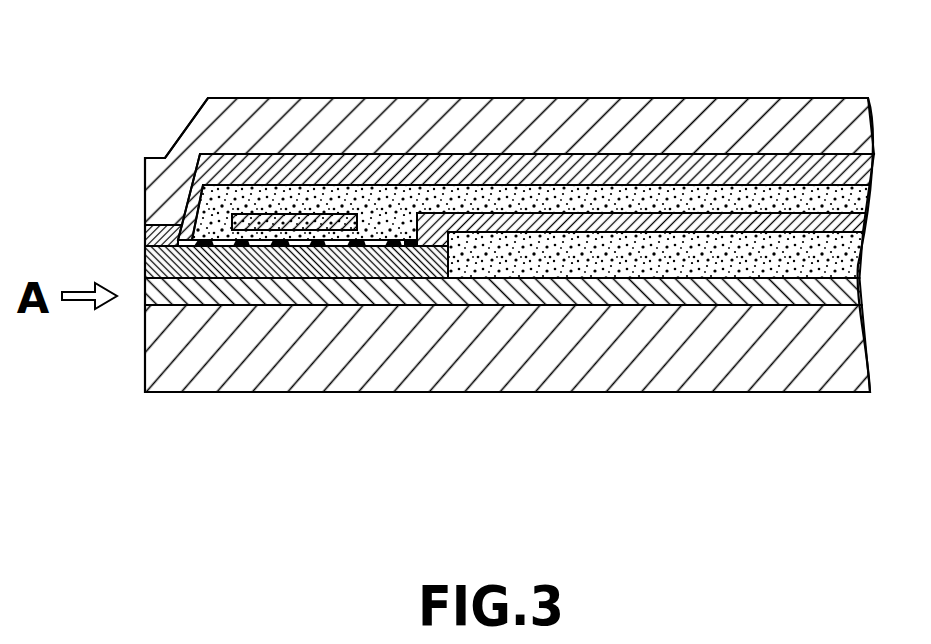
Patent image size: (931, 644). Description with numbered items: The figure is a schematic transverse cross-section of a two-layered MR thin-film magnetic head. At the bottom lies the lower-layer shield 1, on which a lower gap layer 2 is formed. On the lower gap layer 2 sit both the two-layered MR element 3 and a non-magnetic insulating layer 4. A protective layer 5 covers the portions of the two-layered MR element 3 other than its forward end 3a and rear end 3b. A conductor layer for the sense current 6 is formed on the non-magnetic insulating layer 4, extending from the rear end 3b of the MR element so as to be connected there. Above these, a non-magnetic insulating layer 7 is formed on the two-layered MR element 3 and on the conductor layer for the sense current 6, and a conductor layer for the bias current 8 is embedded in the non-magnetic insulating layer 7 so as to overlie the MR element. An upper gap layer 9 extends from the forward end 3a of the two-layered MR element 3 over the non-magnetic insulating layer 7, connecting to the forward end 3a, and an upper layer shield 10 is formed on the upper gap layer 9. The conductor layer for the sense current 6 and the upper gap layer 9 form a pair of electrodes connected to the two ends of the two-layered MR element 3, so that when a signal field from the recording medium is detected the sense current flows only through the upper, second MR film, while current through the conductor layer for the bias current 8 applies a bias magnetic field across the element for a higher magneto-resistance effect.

The lower-layer shield 1 is at (713, 345).
The lower gap layer 2 is at (790, 292).
The two-layered MR element 3 is at (245, 262).
The forward end 3a is at (200, 244).
The rear end 3b is at (432, 216).
The non-magnetic insulating layer 4 is at (580, 256).
The protective layer 5 is at (206, 229).
The conductor layer for the sense current 6 is at (534, 216).
The non-magnetic insulating layer 7 is at (386, 220).
The conductor layer for the bias current 8 is at (324, 224).
The upper gap layer 9 is at (268, 172).
The upper layer shield 10 is at (693, 127).